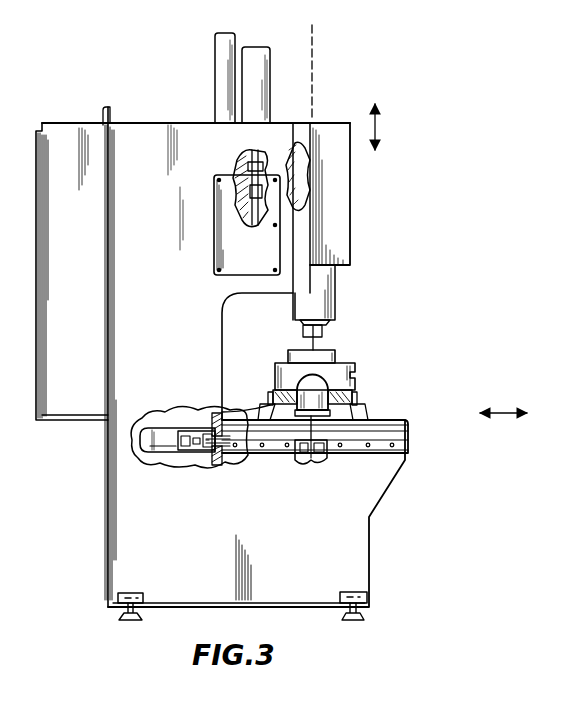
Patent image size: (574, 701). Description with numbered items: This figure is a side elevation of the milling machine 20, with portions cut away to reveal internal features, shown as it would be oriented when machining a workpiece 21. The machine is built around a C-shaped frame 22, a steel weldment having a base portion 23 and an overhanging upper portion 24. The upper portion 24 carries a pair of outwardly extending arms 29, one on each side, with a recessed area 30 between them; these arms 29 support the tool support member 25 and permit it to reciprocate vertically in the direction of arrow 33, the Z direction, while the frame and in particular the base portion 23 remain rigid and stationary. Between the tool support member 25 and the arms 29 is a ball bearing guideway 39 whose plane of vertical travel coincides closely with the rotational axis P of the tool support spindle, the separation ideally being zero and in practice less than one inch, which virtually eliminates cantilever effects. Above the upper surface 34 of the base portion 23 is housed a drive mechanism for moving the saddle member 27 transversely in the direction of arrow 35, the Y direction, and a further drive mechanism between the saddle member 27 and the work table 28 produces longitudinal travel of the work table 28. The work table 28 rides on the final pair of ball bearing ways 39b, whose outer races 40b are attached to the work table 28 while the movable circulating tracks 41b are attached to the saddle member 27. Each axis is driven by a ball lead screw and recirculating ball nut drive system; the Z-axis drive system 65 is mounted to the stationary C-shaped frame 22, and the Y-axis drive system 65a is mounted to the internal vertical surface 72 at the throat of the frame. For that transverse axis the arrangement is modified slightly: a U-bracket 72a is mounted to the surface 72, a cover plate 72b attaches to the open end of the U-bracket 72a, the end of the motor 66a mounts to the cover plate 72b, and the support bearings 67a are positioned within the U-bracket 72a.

The milling machine 20 is at (410, 163).
The workpiece 21 is at (323, 350).
The C-shaped frame 22 is at (108, 443).
The base portion 23 is at (369, 538).
The overhanging upper portion 24 is at (275, 128).
The tool support member 25 is at (349, 228).
The saddle member 27 is at (359, 405).
The work table 28 is at (343, 364).
The outwardly extending arms 29 is at (300, 118).
The recessed area 30 is at (310, 118).
The arrow 33 is at (375, 130).
The upper surface 34 is at (412, 433).
The arrow 35 is at (509, 412).
The ball bearing guideway 39 is at (304, 178).
The ball bearing ways 39b is at (278, 418).
The outer races 40b is at (292, 410).
The movable circulating tracks 41b is at (270, 397).
The ball lead screw and recirculating ball nut drive system 65 is at (230, 172).
The ball lead screw and recirculating ball nut drive system 65a is at (300, 463).
The motor 66a is at (153, 458).
The support bearings 67a is at (200, 458).
The internal vertical surface 72 is at (215, 460).
The U-bracket 72a is at (187, 432).
The cover plate 72b is at (185, 430).
The rotational axis P is at (314, 37).